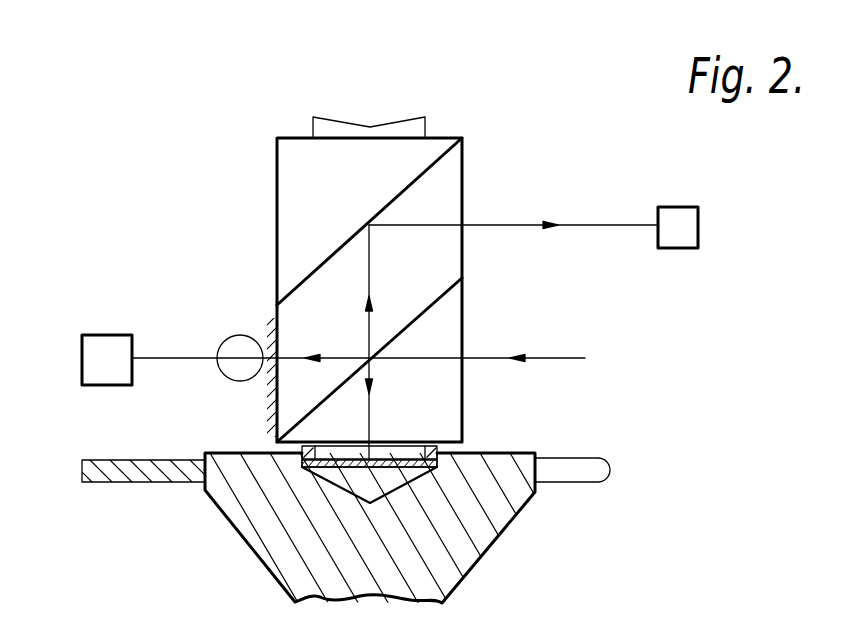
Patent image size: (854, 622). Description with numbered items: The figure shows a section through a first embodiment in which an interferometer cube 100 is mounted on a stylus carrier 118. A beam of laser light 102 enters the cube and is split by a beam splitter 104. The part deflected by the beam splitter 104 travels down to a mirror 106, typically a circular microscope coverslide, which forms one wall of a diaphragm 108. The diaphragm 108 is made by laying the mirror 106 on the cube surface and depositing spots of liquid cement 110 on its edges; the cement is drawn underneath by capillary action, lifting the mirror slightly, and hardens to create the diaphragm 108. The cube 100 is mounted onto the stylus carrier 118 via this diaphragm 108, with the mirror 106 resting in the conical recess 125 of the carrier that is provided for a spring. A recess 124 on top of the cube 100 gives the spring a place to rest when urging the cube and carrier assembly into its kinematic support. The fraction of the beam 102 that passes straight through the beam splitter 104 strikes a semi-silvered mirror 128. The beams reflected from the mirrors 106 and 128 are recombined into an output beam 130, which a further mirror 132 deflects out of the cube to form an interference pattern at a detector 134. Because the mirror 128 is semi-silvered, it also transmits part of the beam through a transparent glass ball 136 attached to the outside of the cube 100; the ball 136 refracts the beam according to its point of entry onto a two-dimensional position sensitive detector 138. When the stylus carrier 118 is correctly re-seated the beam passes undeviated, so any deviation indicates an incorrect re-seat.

The interferometer cube 100 is at (462, 196).
The beam of laser light 102 is at (557, 355).
The beam splitter 104 is at (427, 315).
The mirror 106 is at (330, 470).
The diaphragm 108 is at (403, 443).
The liquid cement 110 is at (313, 443).
The stylus carrier 118 is at (478, 545).
The recess 124 is at (397, 118).
The conical recess 125 is at (388, 443).
The semi-silvered mirror 128 is at (270, 318).
The output beam 130 is at (603, 223).
The further mirror 132 is at (313, 272).
The detector 134 is at (684, 207).
The transparent glass ball 136 is at (229, 338).
The two-dimensional position sensitive detector 138 is at (98, 335).